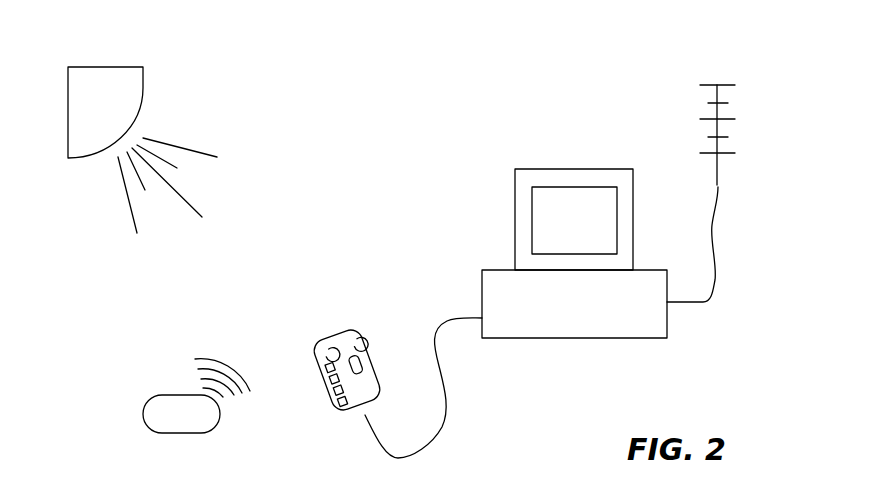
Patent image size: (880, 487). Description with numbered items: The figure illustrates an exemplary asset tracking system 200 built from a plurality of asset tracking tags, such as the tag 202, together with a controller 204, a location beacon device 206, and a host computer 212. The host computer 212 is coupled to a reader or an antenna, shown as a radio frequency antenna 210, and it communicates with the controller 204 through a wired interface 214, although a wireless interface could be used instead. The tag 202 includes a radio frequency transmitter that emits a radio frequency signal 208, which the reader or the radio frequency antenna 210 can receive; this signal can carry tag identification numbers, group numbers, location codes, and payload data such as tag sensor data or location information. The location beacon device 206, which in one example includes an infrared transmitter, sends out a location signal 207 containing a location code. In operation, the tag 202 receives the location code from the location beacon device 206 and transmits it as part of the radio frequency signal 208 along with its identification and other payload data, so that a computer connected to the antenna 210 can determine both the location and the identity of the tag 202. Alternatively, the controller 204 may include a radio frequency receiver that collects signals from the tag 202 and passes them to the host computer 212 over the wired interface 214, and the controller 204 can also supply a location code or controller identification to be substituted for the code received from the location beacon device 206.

The asset tracking system 200 is at (405, 100).
The tag 202 is at (152, 395).
The controller 204 is at (340, 322).
The location beacon device 206 is at (143, 92).
The location signal 207 is at (192, 148).
The radio frequency signal 208 is at (213, 358).
The radio frequency antenna 210 is at (722, 135).
The host computer 212 is at (555, 169).
The wired interface 214 is at (445, 437).